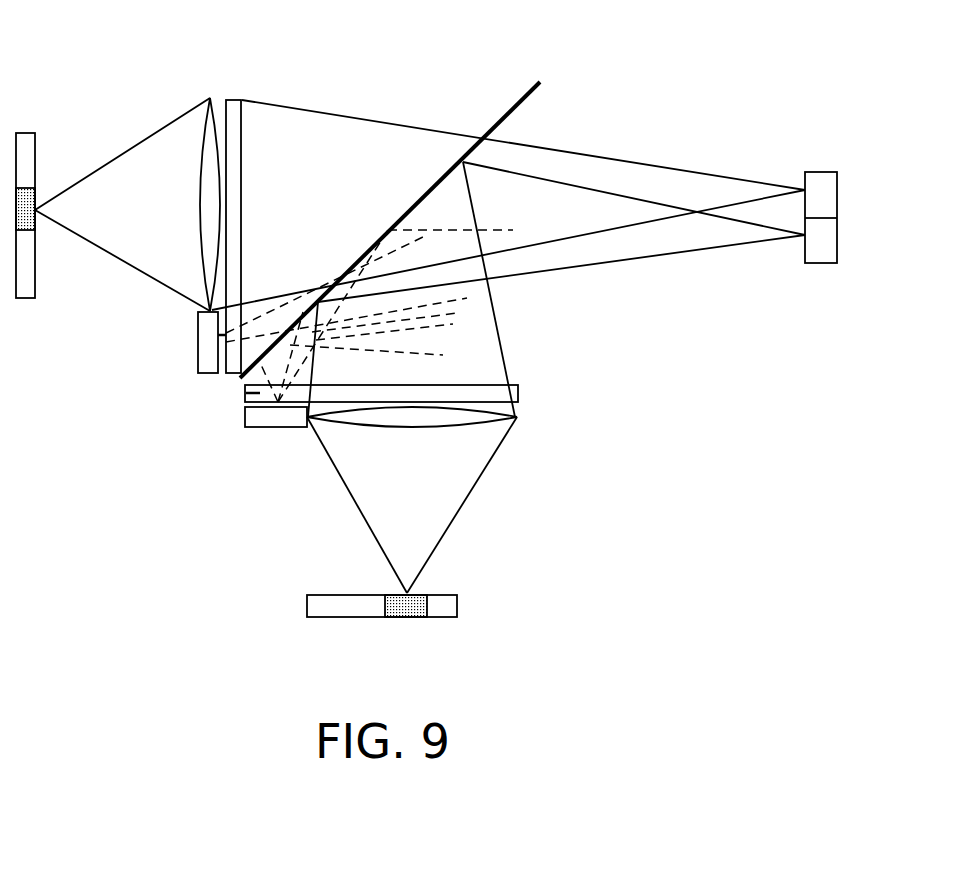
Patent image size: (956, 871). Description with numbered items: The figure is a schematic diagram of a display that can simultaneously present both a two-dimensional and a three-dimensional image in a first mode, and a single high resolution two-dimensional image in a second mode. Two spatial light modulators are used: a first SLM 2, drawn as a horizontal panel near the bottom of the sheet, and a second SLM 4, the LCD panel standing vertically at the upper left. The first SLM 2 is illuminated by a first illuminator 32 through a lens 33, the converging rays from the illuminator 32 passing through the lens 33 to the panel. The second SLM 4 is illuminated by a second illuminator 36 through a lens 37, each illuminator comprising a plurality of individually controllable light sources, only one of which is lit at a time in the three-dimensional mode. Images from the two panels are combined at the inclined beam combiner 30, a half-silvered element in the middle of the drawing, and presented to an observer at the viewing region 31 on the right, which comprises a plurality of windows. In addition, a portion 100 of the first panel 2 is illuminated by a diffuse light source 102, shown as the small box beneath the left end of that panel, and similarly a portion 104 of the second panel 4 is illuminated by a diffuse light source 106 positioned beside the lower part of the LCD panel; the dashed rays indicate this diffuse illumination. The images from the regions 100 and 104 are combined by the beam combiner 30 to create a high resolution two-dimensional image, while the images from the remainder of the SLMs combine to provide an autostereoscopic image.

The first SLM 2 is at (518, 393).
The second SLM 4 is at (232, 100).
The beam combiner 30 is at (515, 108).
The viewing region 31 is at (810, 172).
The first illuminator 32 is at (422, 594).
The lens 33 is at (493, 423).
The second illuminator 36 is at (37, 222).
The lens 37 is at (207, 137).
The portion of the first panel 100 is at (244, 396).
The diffuse light source 102 is at (280, 428).
The portion of the second panel 104 is at (233, 373).
The diffuse light source 106 is at (198, 338).